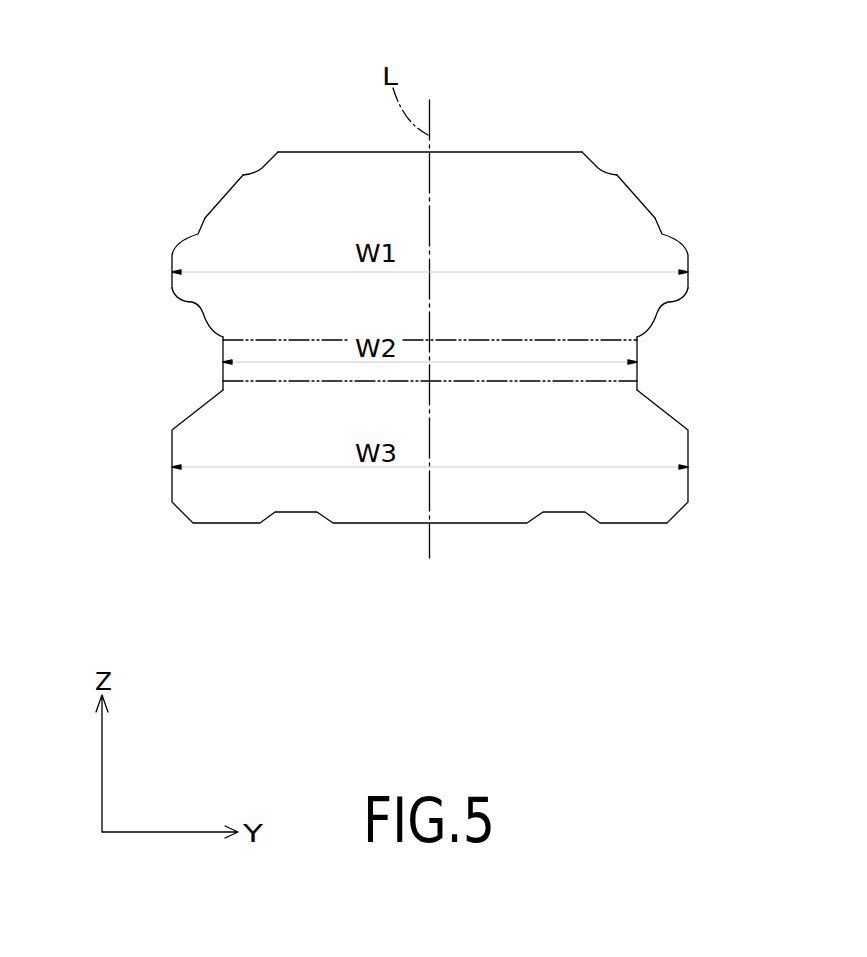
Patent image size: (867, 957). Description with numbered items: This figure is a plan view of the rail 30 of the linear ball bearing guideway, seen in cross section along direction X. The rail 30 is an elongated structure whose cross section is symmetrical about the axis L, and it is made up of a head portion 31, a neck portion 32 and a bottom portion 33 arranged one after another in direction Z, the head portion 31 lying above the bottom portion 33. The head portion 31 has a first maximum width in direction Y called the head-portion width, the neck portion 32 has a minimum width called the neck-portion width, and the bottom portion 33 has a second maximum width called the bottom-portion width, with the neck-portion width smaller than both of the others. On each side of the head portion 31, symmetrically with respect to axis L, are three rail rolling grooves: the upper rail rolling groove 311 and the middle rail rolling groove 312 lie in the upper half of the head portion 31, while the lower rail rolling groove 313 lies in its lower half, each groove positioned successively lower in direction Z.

The rail 30 is at (522, 132).
The head portion 31 is at (592, 232).
The upper rail rolling groove 311 is at (261, 167).
The middle rail rolling groove 312 is at (198, 237).
The lower rail rolling groove 313 is at (192, 302).
The neck portion 32 is at (585, 352).
The bottom portion 33 is at (607, 482).